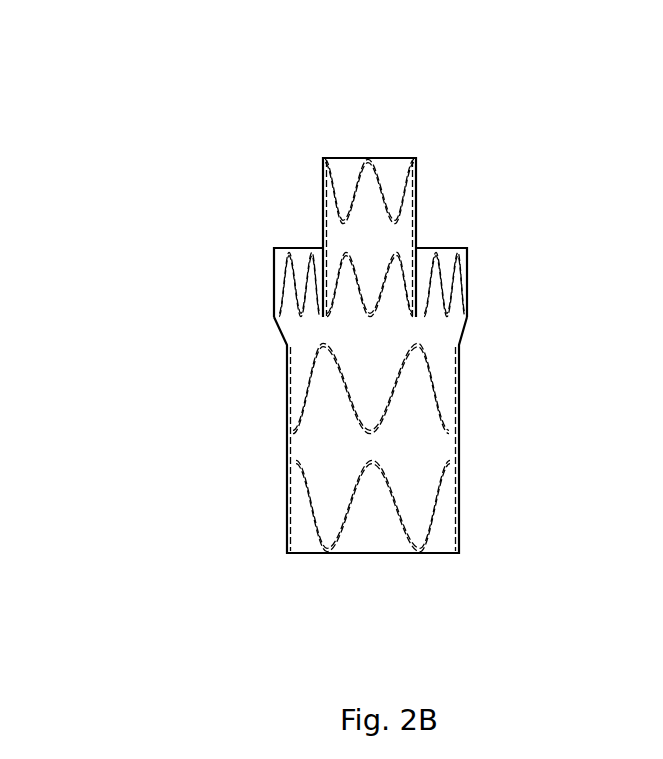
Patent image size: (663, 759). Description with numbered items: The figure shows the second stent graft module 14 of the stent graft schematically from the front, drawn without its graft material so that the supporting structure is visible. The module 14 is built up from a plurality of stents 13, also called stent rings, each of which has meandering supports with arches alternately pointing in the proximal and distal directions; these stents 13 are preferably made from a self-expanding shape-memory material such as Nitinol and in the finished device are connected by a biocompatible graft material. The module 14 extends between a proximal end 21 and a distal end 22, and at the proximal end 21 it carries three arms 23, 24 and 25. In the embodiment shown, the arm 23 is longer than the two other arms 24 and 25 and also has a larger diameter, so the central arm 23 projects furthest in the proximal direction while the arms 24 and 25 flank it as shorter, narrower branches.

The stent 13 is at (433, 375).
The second stent graft module 14 is at (180, 270).
The proximal end 21 is at (322, 140).
The distal end 22 is at (401, 563).
The arm 23 is at (273, 277).
The arm 24 is at (417, 190).
The arm 25 is at (468, 272).